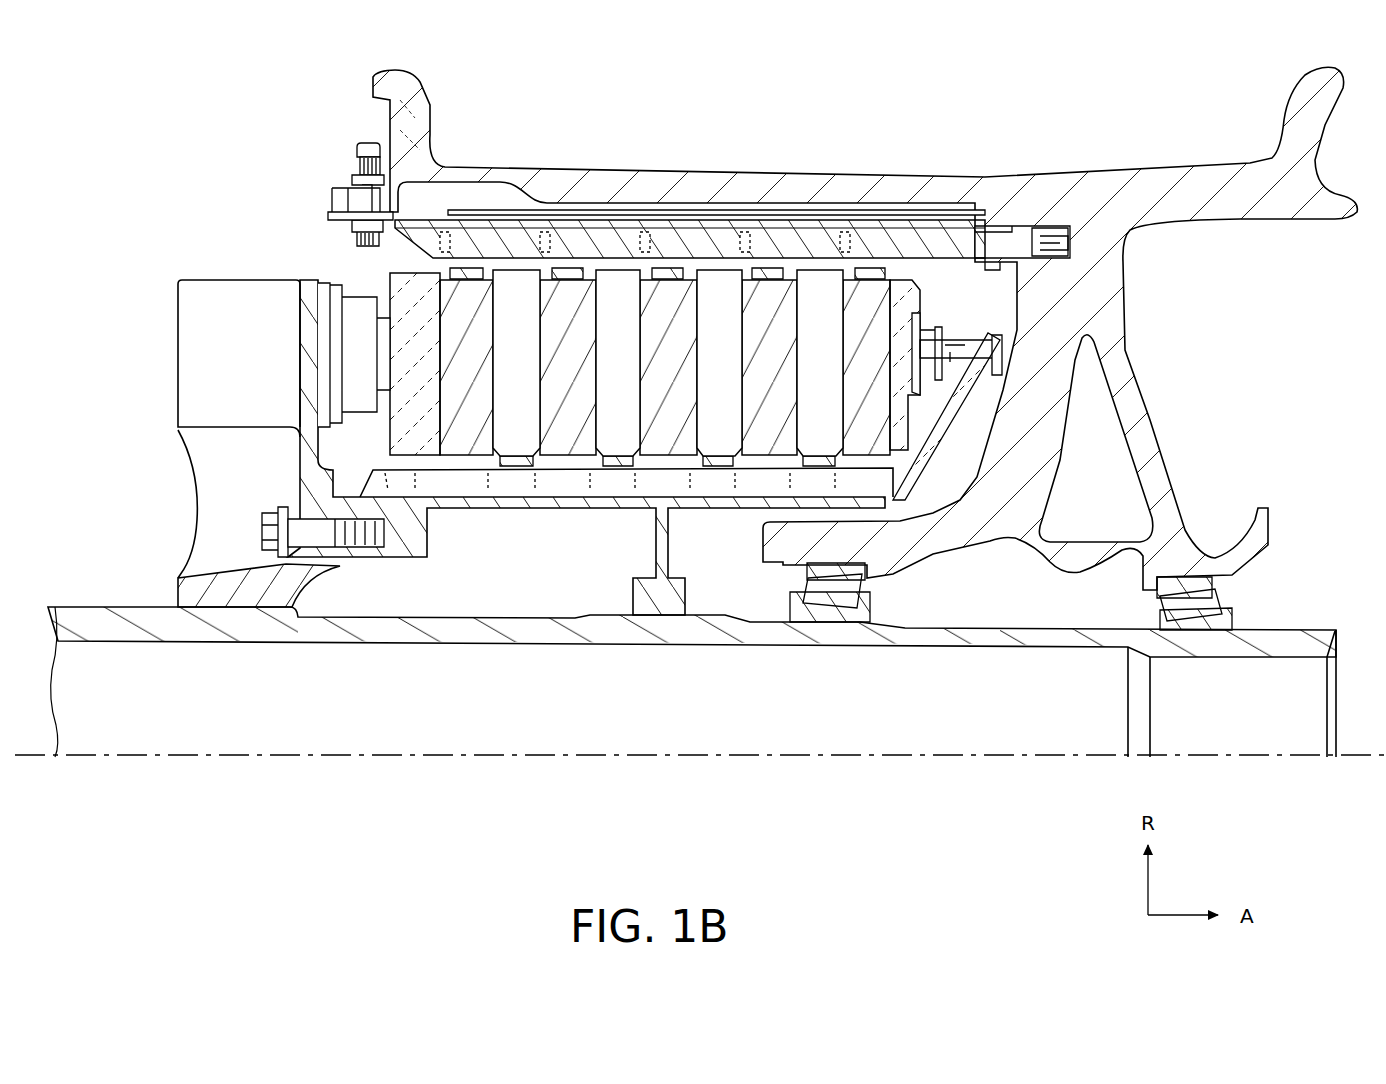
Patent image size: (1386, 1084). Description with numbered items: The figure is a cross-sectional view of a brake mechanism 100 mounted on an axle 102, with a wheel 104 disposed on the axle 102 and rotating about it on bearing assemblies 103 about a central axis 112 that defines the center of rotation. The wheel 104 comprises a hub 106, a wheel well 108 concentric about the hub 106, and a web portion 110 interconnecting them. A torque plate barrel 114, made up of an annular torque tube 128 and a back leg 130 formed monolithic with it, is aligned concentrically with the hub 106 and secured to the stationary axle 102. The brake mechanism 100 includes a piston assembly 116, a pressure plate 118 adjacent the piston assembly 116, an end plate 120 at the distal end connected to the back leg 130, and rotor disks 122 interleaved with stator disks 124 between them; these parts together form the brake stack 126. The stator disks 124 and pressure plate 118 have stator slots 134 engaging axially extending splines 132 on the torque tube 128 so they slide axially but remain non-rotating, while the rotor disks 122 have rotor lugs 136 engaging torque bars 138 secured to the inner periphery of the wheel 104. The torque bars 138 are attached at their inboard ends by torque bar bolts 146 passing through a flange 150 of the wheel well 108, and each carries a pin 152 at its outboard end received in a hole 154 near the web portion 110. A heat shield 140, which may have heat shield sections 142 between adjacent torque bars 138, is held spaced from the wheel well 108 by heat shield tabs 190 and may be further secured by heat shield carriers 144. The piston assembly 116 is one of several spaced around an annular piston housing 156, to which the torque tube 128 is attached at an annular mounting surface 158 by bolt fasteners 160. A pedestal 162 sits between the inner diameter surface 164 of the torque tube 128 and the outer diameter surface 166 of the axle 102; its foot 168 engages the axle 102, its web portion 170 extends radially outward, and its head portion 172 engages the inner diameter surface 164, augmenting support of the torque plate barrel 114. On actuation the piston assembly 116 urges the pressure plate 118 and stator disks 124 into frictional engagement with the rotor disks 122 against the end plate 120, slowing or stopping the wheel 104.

The brake mechanism 100 is at (180, 148).
The axle 102 is at (985, 640).
The bearing assemblies 103 is at (1206, 597).
The wheel 104 is at (865, 348).
The hub 106 is at (848, 543).
The wheel well 108 is at (1012, 180).
The web portion 110 is at (1150, 413).
The central axis 112 is at (940, 762).
The torque plate barrel 114 is at (490, 515).
The piston assembly 116 is at (272, 258).
The pressure plate 118 is at (388, 280).
The end plate 120 is at (922, 290).
The rotor disks 122 is at (468, 282).
The stator disks 124 is at (618, 290).
The brake stack 126 is at (778, 290).
The torque tube 128 is at (446, 515).
The back leg 130 is at (666, 475).
The splines 132 is at (370, 478).
The stator slots 134 is at (797, 485).
The rotor lugs 136 is at (540, 262).
The torque bars 138 is at (925, 240).
The heat shield 140 is at (663, 210).
The heat shield sections 142 is at (770, 250).
The heat shield carriers 144 is at (412, 198).
The torque bar bolts 146 is at (367, 142).
The flange 150 is at (338, 192).
The pin 152 is at (1022, 240).
The hole 154 is at (1060, 238).
The annular piston housing 156 is at (178, 283).
The annular mounting surface 158 is at (380, 565).
The bolt fasteners 160 is at (262, 528).
The pedestal 162 is at (640, 540).
The inner diameter surface 164 is at (538, 509).
The outer diameter surface 166 is at (688, 612).
The foot 168 is at (695, 577).
The web portion 170 is at (652, 563).
The head portion 172 is at (651, 510).
The heat shield tabs 190 is at (965, 290).